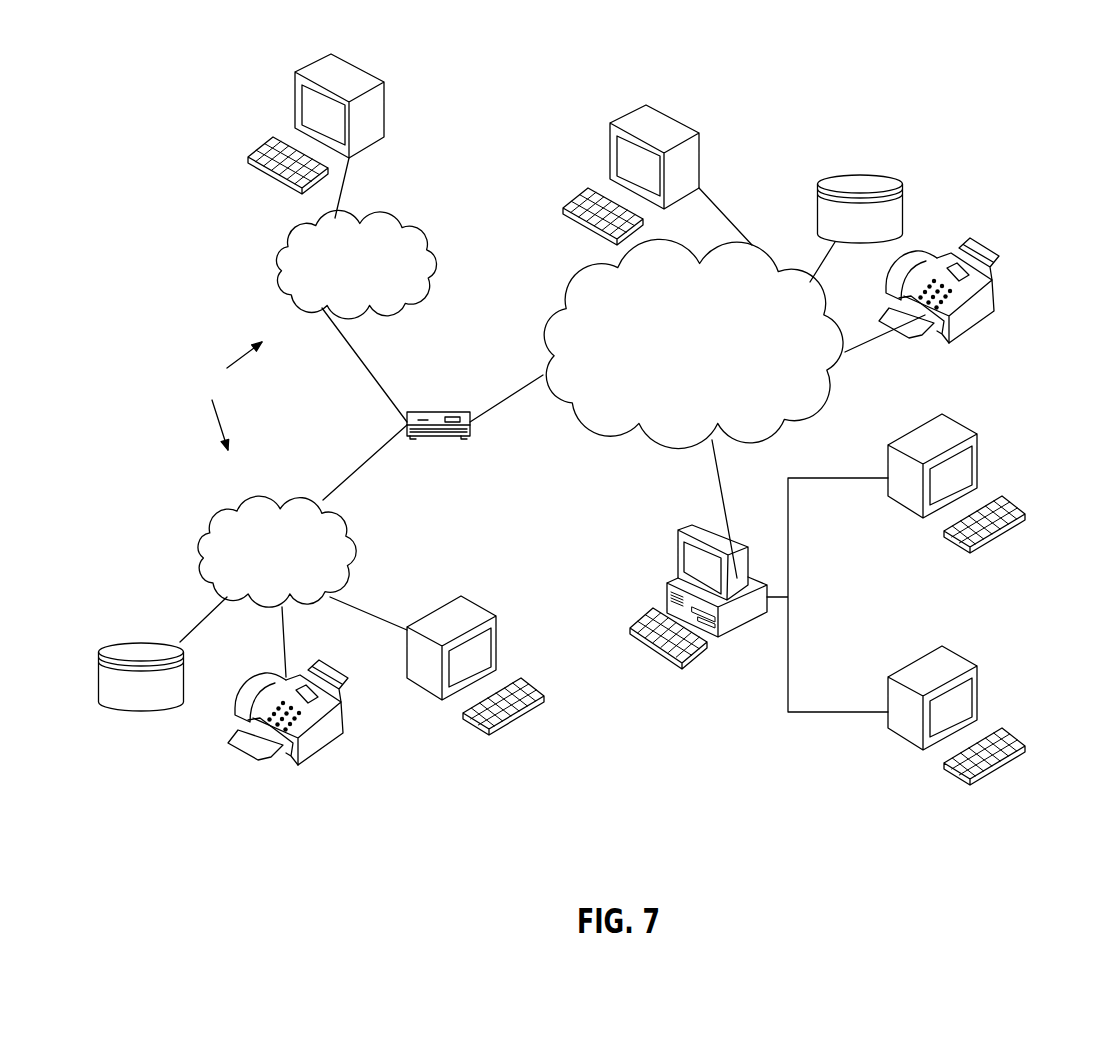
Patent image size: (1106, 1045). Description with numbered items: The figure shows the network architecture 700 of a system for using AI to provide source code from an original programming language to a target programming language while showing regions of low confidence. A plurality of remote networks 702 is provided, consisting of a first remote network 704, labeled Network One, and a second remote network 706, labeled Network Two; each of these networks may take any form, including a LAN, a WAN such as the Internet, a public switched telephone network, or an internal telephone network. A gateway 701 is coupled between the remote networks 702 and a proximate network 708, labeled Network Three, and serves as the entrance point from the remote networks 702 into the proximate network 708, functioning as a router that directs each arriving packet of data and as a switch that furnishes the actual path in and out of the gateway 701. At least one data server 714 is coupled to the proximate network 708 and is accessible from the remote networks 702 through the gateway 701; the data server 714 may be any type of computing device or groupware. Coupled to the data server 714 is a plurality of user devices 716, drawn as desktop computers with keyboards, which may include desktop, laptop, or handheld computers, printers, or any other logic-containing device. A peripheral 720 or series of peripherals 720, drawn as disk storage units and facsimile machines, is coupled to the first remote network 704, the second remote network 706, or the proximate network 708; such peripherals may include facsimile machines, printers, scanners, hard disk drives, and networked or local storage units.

The network architecture 700 is at (595, 42).
The gateway 701 is at (438, 412).
The remote networks 702 is at (225, 396).
The first remote network 704 is at (200, 527).
The second remote network 706 is at (438, 272).
The proximate network 708 is at (812, 403).
The data server 714 is at (678, 553).
The user devices 716 is at (385, 112).
The peripheral 720 is at (858, 174).